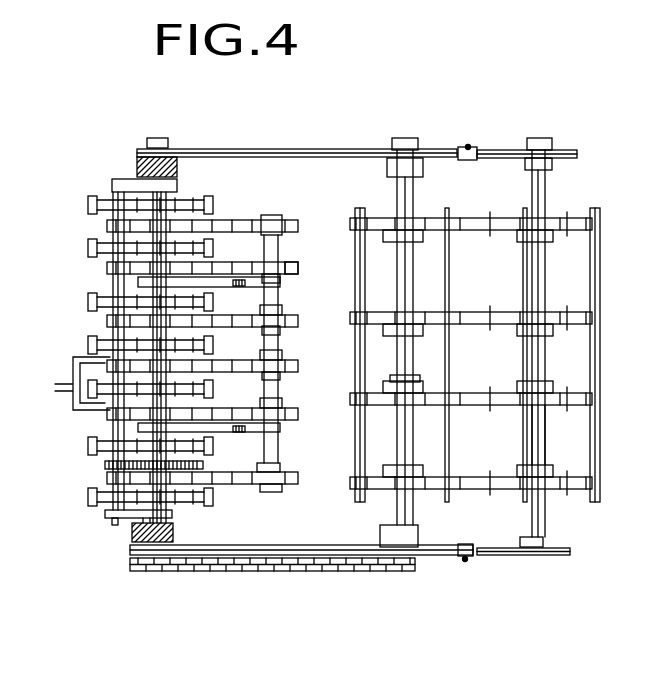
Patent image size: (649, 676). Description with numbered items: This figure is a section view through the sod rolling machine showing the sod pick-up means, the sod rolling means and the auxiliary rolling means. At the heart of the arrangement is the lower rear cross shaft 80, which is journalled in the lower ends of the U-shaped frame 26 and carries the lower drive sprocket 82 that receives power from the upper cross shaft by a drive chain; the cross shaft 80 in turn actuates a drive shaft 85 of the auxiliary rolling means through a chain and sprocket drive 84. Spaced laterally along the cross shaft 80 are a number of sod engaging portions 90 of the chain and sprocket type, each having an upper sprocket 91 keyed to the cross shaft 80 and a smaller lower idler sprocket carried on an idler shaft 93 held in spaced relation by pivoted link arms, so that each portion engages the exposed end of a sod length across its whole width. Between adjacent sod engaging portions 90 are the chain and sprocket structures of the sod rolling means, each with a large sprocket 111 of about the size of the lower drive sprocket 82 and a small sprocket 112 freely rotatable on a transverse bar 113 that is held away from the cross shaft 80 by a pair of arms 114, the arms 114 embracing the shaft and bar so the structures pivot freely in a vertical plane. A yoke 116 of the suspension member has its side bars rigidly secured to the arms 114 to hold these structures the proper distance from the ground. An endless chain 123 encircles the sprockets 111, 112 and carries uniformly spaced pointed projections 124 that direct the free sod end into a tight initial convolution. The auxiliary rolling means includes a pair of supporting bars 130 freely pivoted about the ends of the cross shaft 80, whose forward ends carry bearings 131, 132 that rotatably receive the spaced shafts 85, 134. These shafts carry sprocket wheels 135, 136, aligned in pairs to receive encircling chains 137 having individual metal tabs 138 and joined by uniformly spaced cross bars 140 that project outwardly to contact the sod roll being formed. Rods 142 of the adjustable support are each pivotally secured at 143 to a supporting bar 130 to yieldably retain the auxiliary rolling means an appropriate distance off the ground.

The U-shaped frame 26 is at (138, 163).
The lower rear cross shaft 80 is at (145, 543).
The lower drive sprocket 82 is at (105, 464).
The chain and sprocket drive 84 is at (267, 572).
The drive shaft 85 is at (400, 510).
The sod engaging portions 90 is at (86, 292).
The upper sprocket 91 is at (182, 200).
The idler shaft 93 is at (108, 522).
The large sprocket 111 is at (130, 420).
The small sprocket 112 is at (277, 472).
The transverse bar 113 is at (278, 362).
The arms 114 is at (232, 283).
The yoke 116 is at (245, 283).
The endless chain 123 is at (240, 220).
The pointed projections 124 is at (290, 265).
The supporting bars 130 is at (367, 135).
The bearing 131 is at (418, 175).
The bearing 132 is at (552, 163).
The shaft 134 is at (537, 447).
The sprocket wheels 135 is at (393, 382).
The sprocket wheels 136 is at (513, 385).
The chains 137 is at (490, 232).
The metal tabs 138 is at (495, 312).
The cross bars 140 is at (356, 378).
The rods 142 is at (470, 145).
The pivot 143 is at (468, 160).